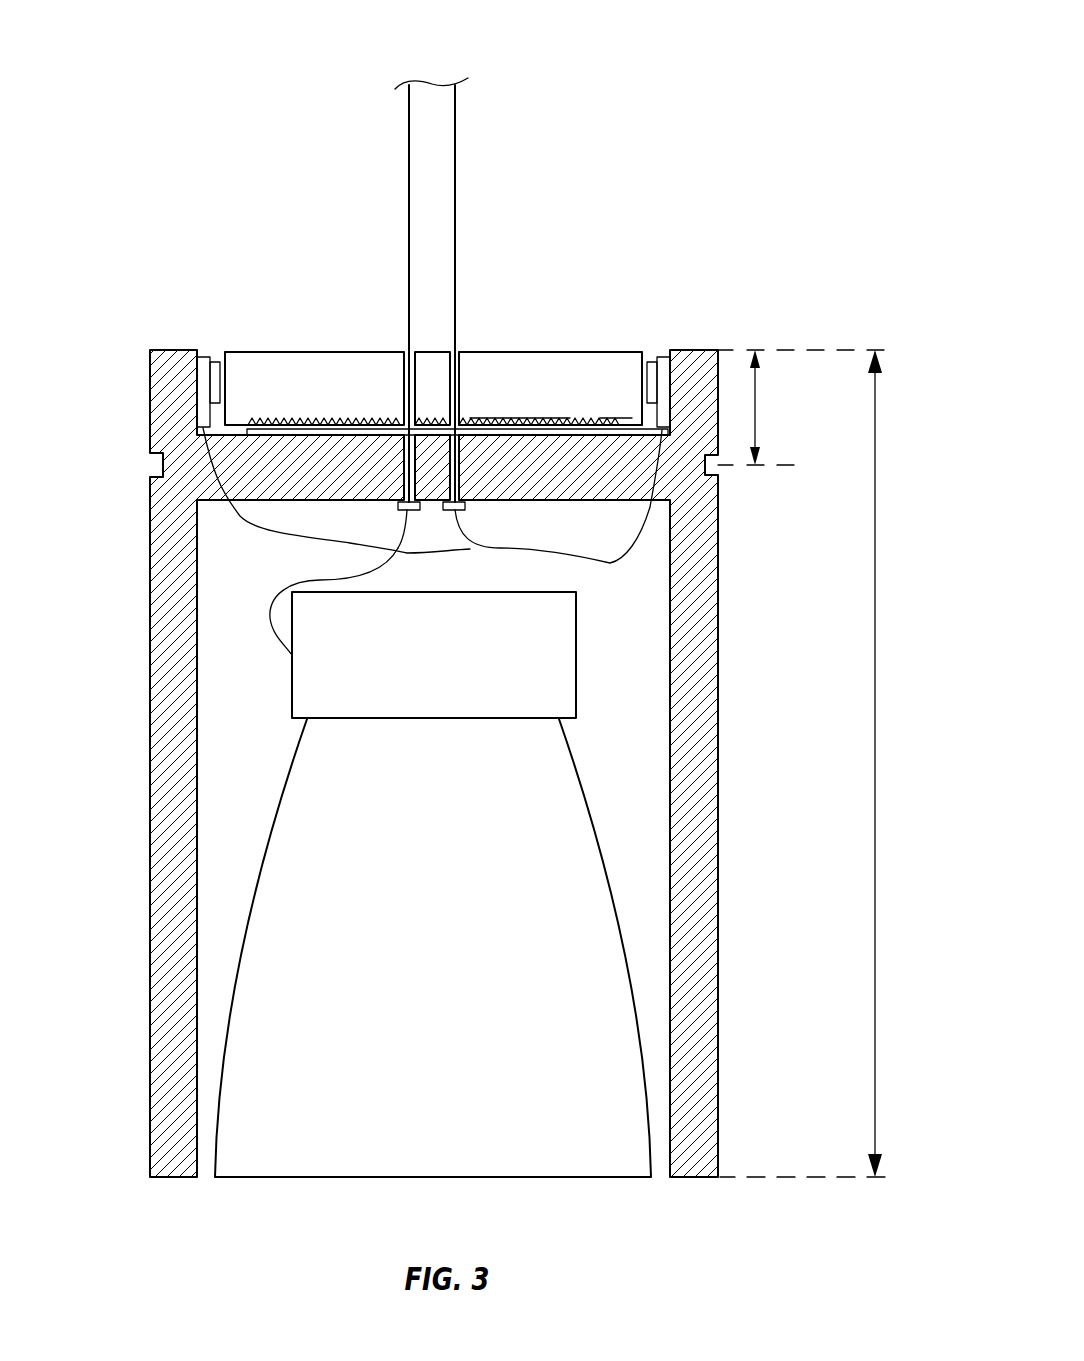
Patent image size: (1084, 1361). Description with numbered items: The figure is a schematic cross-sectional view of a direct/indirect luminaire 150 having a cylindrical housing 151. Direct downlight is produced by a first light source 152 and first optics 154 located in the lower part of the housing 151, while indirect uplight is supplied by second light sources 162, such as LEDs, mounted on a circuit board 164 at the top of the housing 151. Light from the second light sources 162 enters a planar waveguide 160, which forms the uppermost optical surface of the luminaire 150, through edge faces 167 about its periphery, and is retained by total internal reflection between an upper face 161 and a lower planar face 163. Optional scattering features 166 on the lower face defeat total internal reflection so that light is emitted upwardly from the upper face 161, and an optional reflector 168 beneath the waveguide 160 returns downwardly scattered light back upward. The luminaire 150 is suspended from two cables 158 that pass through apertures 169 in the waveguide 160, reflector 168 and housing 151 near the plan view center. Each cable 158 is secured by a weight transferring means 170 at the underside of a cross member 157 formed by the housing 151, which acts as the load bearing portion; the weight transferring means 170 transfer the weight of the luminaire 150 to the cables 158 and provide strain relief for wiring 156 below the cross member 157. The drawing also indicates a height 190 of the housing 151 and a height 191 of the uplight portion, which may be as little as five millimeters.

The direct/indirect luminaire 150 is at (650, 136).
The housing 151 is at (150, 419).
The first light source 152 is at (577, 652).
The first optics 154 is at (641, 1093).
The wiring 156 is at (268, 530).
The cross member 157 is at (334, 478).
The cables 158 is at (455, 215).
The waveguide 160 is at (370, 370).
The upper face 161 is at (321, 342).
The second light sources 162 is at (214, 356).
The lower planar face 163 is at (238, 408).
The circuit board 164 is at (207, 356).
The scattering features 166 is at (570, 417).
The edge faces 167 is at (630, 380).
The reflector 168 is at (630, 417).
The apertures 169 is at (468, 338).
The weight transferring means 170 is at (397, 506).
The height 190 is at (875, 732).
The height of the uplight portion 191 is at (758, 420).